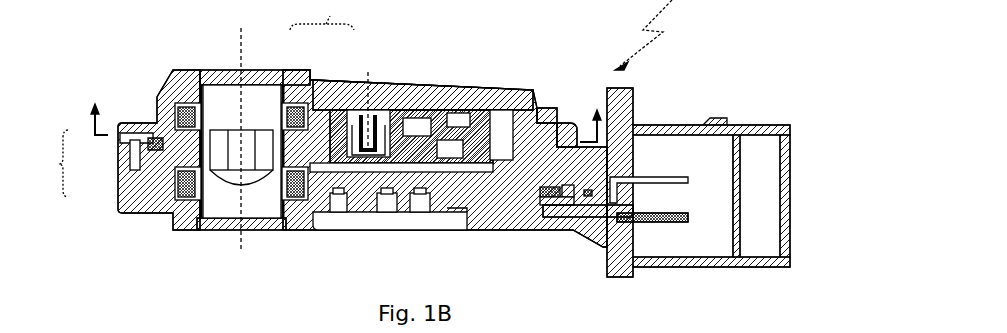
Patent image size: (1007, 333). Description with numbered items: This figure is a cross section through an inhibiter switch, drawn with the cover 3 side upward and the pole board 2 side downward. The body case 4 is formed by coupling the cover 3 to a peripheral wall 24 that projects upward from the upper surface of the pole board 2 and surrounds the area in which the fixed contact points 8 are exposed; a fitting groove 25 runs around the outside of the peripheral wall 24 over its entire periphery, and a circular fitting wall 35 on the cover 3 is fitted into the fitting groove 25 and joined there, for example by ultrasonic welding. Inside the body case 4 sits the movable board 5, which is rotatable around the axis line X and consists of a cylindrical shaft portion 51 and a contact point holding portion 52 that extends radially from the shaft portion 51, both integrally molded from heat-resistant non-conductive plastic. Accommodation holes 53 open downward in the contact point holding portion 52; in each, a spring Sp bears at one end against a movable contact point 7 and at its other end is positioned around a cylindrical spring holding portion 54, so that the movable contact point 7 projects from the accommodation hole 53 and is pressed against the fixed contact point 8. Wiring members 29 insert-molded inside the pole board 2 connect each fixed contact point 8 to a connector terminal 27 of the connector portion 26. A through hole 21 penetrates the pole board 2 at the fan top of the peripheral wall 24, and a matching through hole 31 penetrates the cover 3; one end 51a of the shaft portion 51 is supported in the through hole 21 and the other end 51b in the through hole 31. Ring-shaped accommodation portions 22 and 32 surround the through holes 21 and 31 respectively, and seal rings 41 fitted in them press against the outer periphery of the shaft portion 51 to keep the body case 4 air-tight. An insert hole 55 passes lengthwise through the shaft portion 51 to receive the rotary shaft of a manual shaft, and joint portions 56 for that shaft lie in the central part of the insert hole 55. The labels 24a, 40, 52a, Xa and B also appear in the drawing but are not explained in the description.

The pole board 2 is at (118, 185).
The cover 3 is at (118, 132).
The body case 4 is at (56, 163).
The movable board 5 is at (322, 16).
The movable contact point 7 is at (300, 153).
The fixed contact point 8 is at (385, 175).
The through hole 21 is at (282, 225).
The accommodation portion 22 is at (315, 228).
The peripheral wall 24 is at (160, 215).
The housing wall portion 24a is at (470, 190).
The fitting groove 25 is at (150, 172).
The connector portion 26 is at (668, 124).
The connector terminal 27 is at (690, 180).
The wiring member 29 is at (560, 218).
The through hole 31 is at (285, 100).
The accommodation portion 32 is at (180, 95).
The fitting wall 35 is at (140, 123).
The rib 40 is at (160, 125).
The seal ring 41 is at (197, 120).
The shaft portion 51 is at (303, 78).
The one end of the shaft portion 51a is at (205, 226).
The other end of the shaft portion 51b is at (216, 80).
The contact point holding portion 52 is at (350, 82).
The lid opening 52a is at (458, 113).
The accommodation hole 53 is at (411, 141).
The spring holding portion 54 is at (378, 118).
The insert hole 55 is at (228, 203).
The joint portion 56 is at (237, 132).
The axis line X is at (242, 128).
The sensor axis Xa is at (368, 100).
The spring Sp is at (450, 151).
The section line B is at (344, 113).